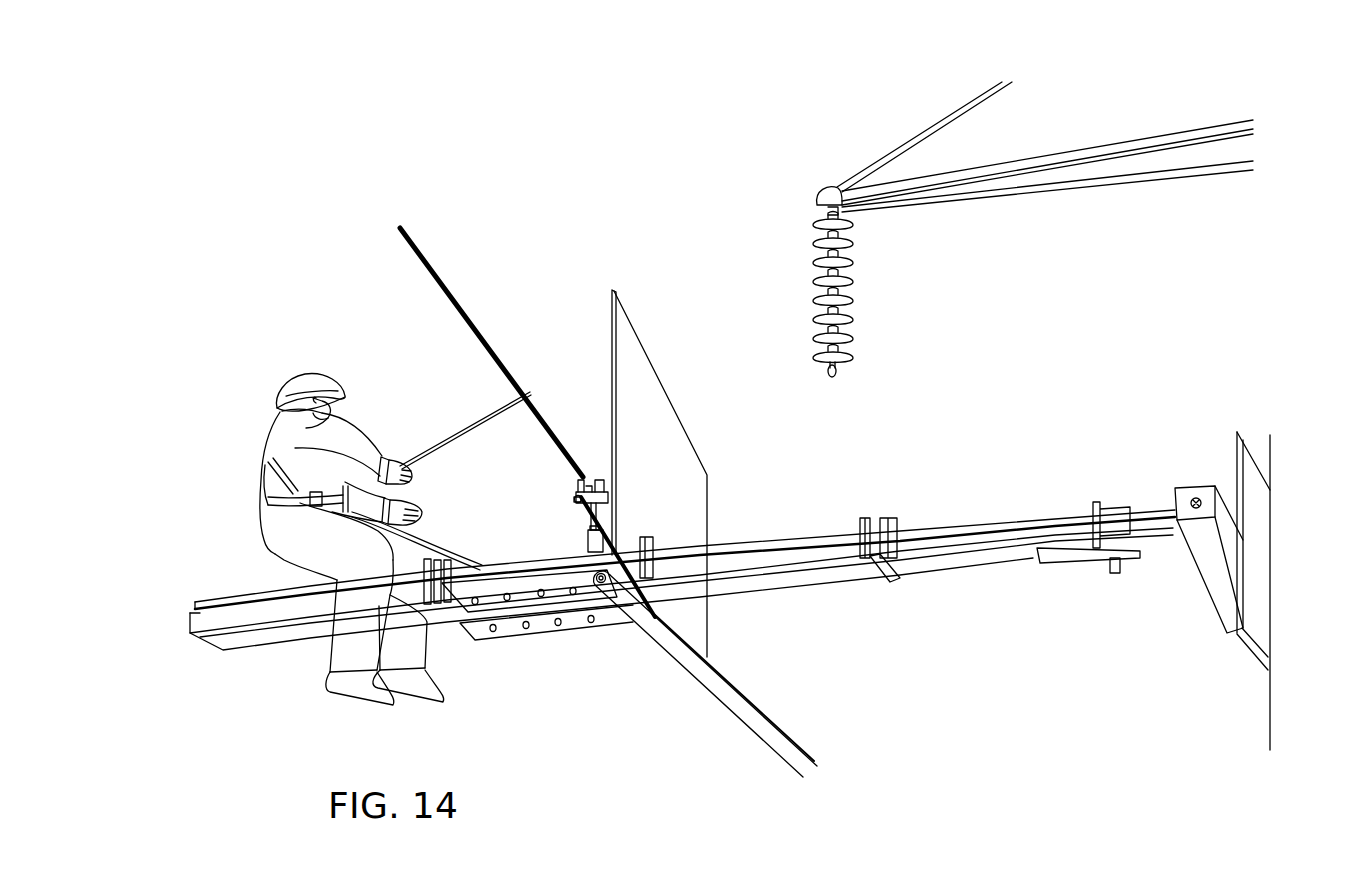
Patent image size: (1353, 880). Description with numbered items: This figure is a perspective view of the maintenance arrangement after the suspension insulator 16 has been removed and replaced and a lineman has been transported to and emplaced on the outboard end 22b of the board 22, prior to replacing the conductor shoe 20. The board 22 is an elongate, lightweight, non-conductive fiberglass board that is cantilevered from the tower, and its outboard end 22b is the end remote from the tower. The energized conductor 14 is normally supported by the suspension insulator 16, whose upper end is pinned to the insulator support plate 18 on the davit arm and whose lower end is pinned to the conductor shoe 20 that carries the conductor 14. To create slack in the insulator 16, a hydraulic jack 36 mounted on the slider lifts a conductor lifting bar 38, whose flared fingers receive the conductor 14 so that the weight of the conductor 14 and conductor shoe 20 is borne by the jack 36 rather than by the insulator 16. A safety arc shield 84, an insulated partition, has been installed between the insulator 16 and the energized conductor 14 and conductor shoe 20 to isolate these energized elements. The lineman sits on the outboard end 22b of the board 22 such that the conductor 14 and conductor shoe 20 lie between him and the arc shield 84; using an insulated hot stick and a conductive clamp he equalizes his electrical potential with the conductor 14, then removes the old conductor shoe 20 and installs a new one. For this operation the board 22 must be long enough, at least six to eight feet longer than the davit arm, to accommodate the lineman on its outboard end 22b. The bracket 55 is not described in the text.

The conductor 14 is at (453, 290).
The suspension insulator 16 is at (810, 262).
The insulator support plate 18 is at (818, 187).
The conductor shoe 20 is at (600, 480).
The board 22 is at (258, 652).
The outboard end of board 22b is at (230, 593).
The hydraulic jack 36 is at (588, 545).
The conductor lifting bar 38 is at (572, 503).
The mounting bracket 55 is at (1183, 493).
The safety arc shield 84 is at (640, 378).